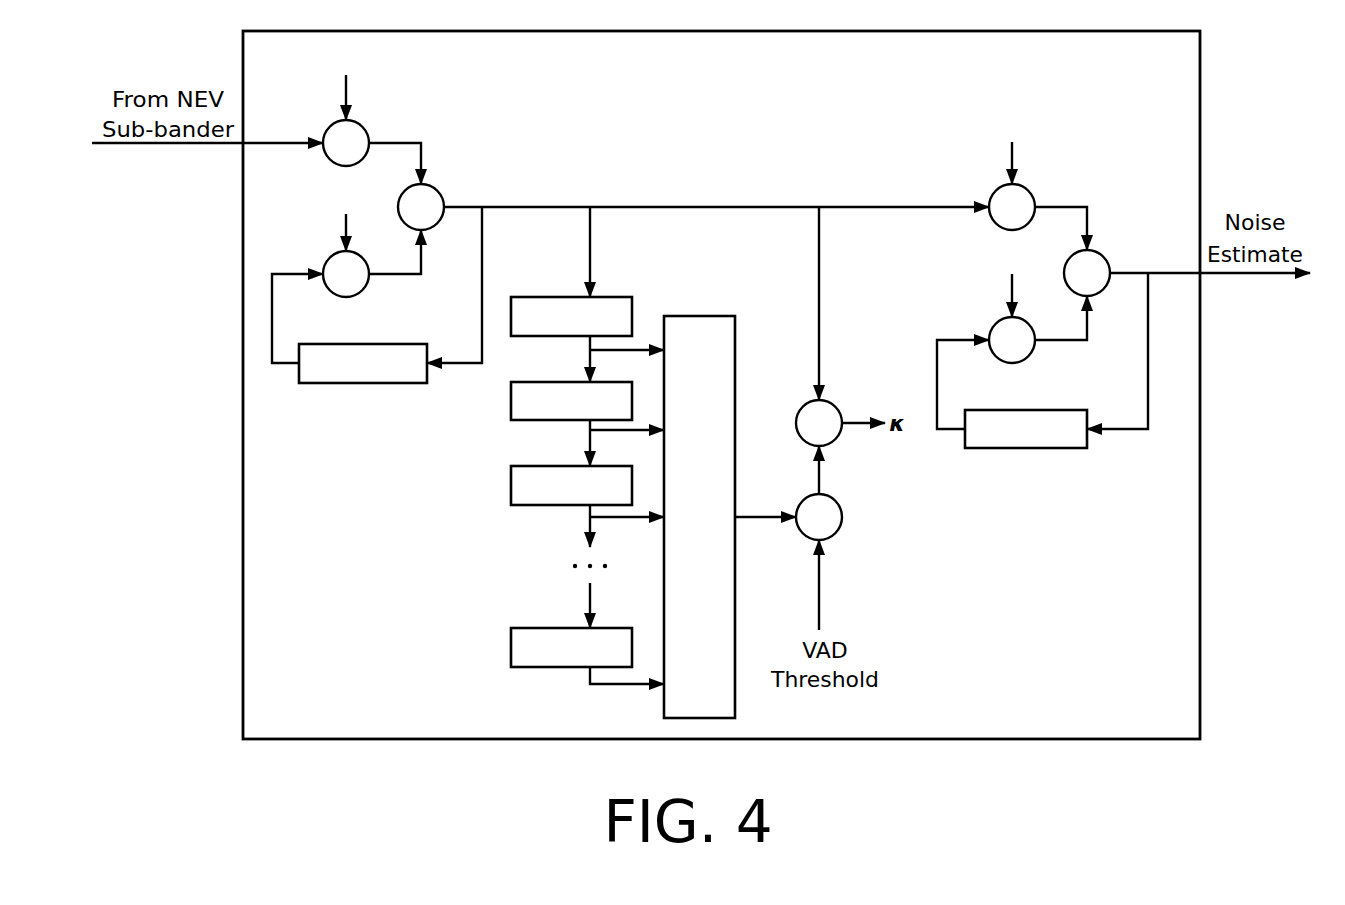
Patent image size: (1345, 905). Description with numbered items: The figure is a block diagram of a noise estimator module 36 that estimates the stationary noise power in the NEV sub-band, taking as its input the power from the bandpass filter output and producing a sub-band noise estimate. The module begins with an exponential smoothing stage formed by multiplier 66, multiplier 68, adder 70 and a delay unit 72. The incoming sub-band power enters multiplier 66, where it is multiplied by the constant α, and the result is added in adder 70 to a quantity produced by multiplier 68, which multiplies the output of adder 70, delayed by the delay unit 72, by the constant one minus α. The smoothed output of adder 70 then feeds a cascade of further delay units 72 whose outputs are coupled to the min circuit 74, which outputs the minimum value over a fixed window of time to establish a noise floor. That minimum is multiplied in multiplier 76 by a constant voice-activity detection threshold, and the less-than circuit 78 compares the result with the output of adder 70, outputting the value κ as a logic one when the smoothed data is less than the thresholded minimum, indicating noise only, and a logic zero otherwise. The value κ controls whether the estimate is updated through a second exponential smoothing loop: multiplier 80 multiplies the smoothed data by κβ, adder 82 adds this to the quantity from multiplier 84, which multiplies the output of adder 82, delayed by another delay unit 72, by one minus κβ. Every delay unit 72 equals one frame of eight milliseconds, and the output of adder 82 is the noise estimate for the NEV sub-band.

The noise estimator module 36 is at (1228, 120).
The multiplier 66 is at (362, 126).
The multiplier 68 is at (328, 258).
The adder 70 is at (437, 190).
The delay unit 72 is at (410, 377).
The min circuit 74 is at (685, 545).
The multiplier 76 is at (838, 505).
The less-than circuit 78 is at (834, 405).
The multiplier 80 is at (1030, 190).
The adder 82 is at (1103, 256).
The multiplier 84 is at (993, 322).